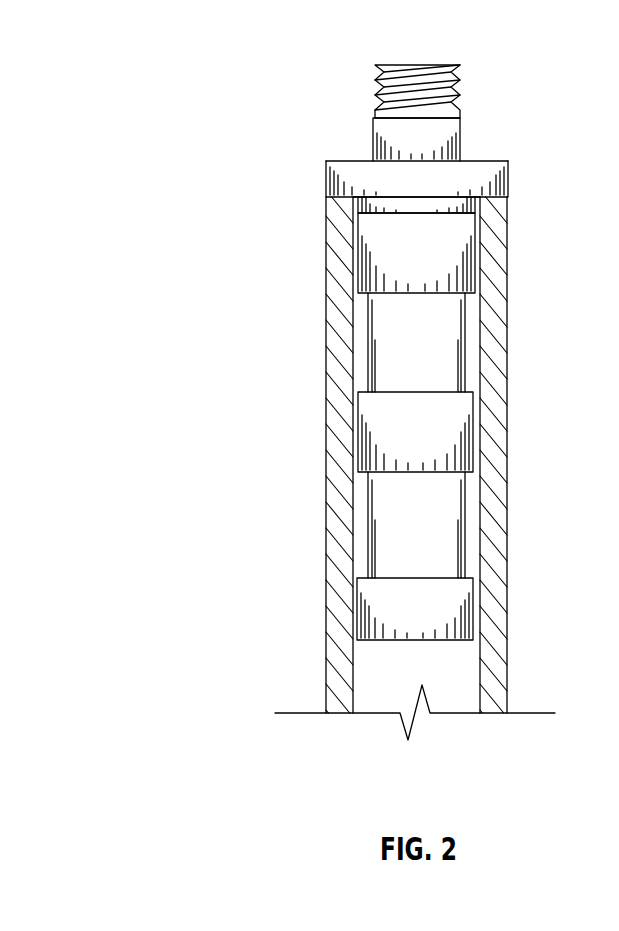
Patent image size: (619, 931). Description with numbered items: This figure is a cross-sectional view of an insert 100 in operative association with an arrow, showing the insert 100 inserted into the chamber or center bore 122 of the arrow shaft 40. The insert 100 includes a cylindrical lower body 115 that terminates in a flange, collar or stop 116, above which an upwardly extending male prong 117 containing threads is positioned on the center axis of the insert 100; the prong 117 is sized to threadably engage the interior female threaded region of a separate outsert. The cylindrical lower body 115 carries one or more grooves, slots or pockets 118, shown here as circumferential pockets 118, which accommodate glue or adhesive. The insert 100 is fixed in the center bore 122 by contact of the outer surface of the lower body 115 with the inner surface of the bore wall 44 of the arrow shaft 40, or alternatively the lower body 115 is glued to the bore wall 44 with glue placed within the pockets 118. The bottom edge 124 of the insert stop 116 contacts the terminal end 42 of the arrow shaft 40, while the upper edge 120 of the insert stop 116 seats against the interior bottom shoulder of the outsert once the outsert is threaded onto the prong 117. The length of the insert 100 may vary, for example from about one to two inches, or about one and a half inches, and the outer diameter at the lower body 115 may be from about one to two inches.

The insert 100 is at (361, 52).
The male prong 117 is at (458, 97).
The stop 116 is at (510, 173).
The upper edge of insert stop 120 is at (340, 160).
The bottom edge of insert stop 124 is at (342, 198).
The terminal end of the arrow shaft 42 is at (500, 198).
The bore wall 44 is at (352, 348).
The pockets 118 is at (472, 342).
The cylindrical lower body 115 is at (382, 615).
The arrow shaft 40 is at (507, 585).
The center bore 122 is at (458, 660).